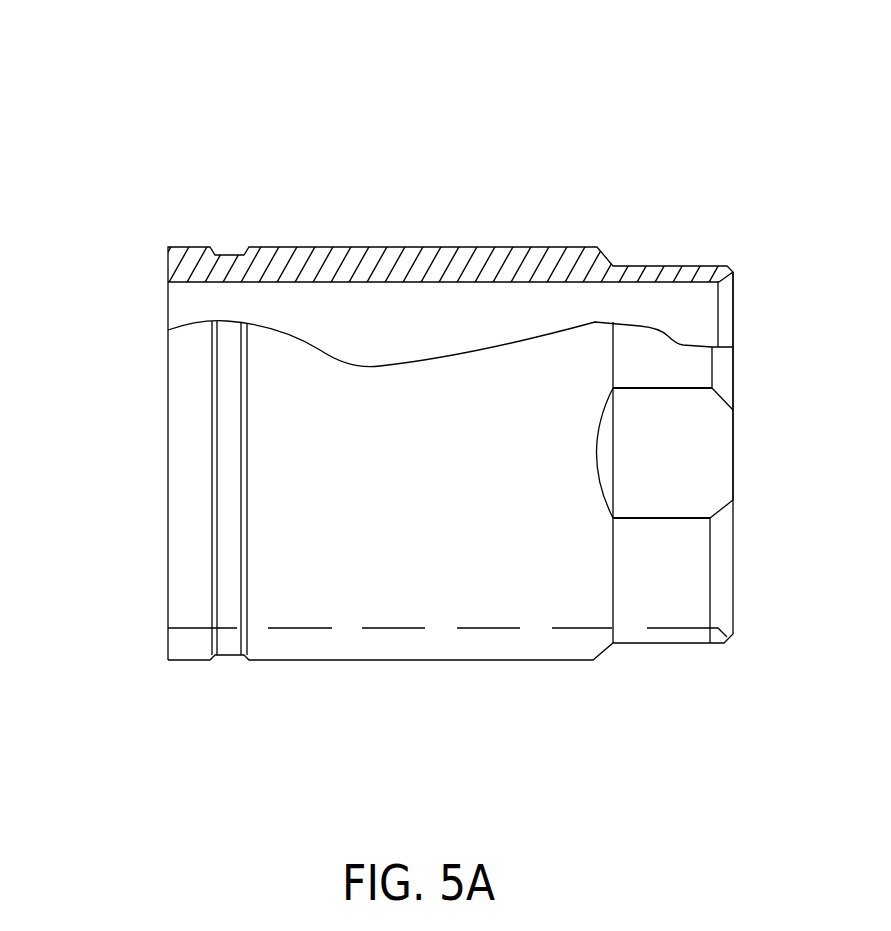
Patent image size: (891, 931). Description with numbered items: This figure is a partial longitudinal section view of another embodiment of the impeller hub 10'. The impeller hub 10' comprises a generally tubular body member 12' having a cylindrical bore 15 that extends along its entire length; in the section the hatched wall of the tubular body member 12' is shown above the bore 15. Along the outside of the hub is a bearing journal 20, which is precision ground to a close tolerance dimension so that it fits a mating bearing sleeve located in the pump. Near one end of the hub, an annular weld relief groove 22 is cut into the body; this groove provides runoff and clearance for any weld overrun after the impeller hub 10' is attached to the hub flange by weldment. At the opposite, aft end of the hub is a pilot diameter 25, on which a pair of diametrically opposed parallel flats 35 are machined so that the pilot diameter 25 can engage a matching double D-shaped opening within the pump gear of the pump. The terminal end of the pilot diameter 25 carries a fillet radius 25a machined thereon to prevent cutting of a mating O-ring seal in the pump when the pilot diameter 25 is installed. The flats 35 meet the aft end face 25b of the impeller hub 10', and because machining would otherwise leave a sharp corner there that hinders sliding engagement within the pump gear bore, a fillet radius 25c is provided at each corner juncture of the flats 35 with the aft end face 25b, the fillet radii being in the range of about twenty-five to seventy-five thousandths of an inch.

The impeller hub 10' is at (450, 343).
The tubular body member 12' is at (449, 219).
The cylindrical bore 15 is at (198, 300).
The bearing journal 20 is at (422, 662).
The annular weld relief groove 22 is at (227, 657).
The pilot diameter 25 is at (665, 644).
The fillet radius 25a is at (735, 268).
The aft end face 25b is at (736, 358).
The fillet radius 25c is at (740, 465).
The flats 35 is at (688, 468).